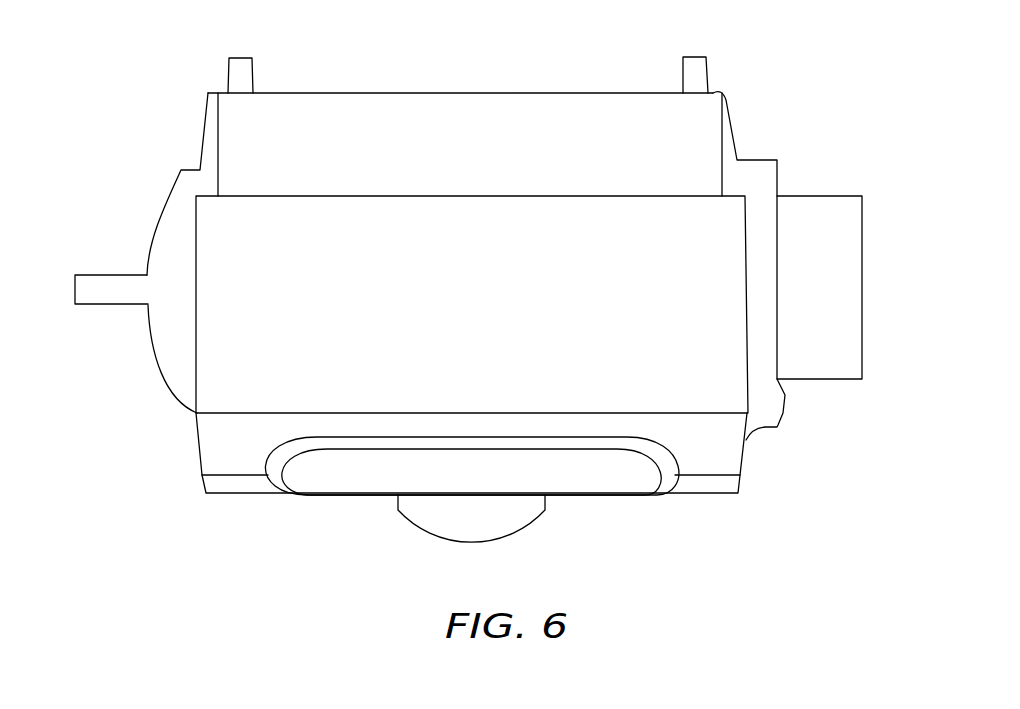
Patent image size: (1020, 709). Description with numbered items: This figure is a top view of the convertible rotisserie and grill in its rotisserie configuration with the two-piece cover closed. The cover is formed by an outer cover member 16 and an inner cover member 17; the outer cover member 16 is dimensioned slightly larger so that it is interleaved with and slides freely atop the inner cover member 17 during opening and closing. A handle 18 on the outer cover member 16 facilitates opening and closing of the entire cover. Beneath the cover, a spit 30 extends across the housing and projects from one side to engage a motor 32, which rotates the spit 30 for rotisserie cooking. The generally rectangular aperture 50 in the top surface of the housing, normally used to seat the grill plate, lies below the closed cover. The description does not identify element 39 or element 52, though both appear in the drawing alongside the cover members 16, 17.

The outer cover member 16 is at (713, 460).
The inner cover member 17 is at (478, 340).
The handle 18 is at (440, 522).
The spit 30 is at (90, 283).
The motor 32 is at (848, 212).
The housing shell 39 is at (710, 110).
The rectangular aperture 50 is at (268, 495).
The mounting lugs 52 is at (248, 78).